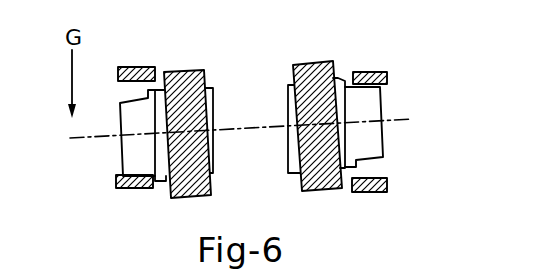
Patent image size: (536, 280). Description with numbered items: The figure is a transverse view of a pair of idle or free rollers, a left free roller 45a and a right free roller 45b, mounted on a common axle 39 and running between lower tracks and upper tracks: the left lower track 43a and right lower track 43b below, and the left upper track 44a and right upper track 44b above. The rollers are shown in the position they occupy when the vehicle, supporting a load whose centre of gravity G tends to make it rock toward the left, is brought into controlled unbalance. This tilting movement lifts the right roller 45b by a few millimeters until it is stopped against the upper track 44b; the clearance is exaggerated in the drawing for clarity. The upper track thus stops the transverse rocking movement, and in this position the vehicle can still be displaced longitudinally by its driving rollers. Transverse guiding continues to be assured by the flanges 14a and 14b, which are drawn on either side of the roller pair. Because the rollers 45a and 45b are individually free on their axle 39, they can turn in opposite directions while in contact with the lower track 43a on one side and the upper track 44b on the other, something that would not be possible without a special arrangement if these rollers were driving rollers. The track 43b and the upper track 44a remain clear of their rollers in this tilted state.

The flange 14a is at (167, 176).
The flange 14b is at (338, 82).
The common axle 39 is at (267, 128).
The lower track 43a is at (133, 189).
The lower track 43b is at (388, 185).
The upper track 44a is at (138, 66).
The upper track 44b is at (367, 71).
The free roller 45a is at (127, 118).
The free roller 45b is at (377, 137).